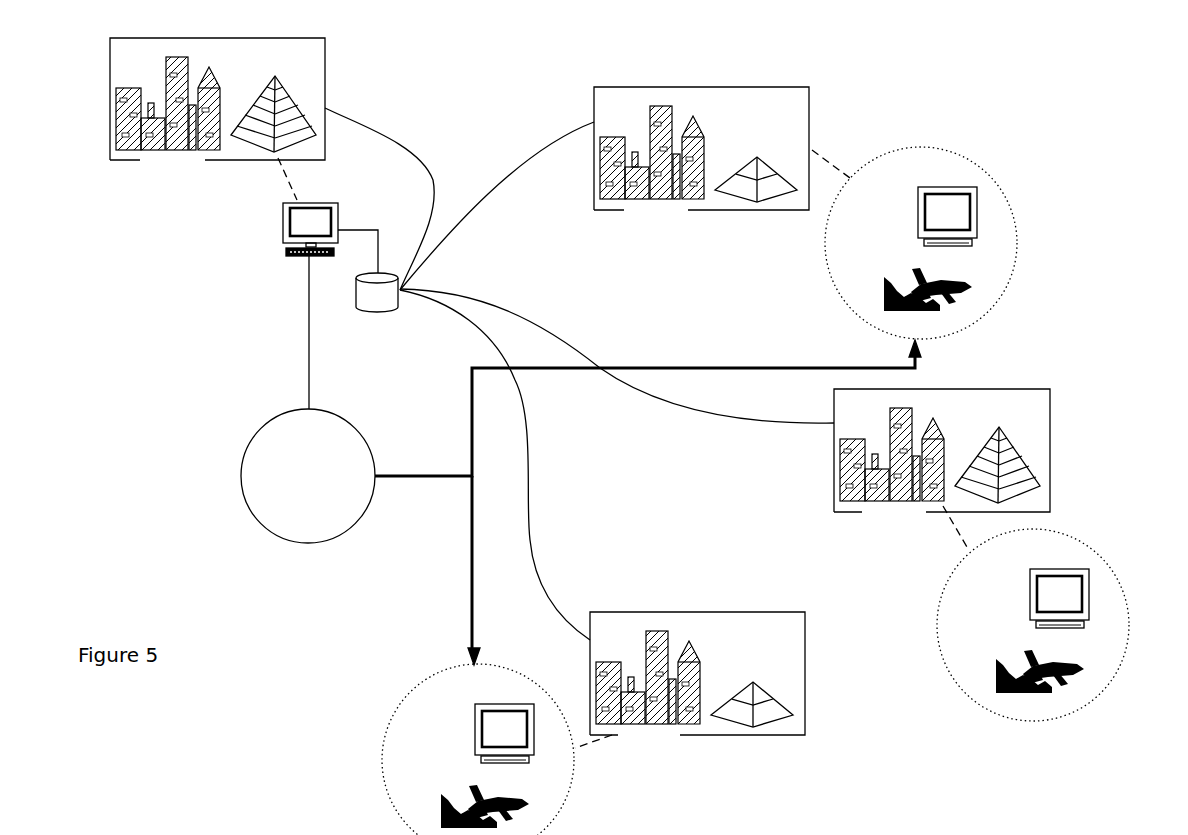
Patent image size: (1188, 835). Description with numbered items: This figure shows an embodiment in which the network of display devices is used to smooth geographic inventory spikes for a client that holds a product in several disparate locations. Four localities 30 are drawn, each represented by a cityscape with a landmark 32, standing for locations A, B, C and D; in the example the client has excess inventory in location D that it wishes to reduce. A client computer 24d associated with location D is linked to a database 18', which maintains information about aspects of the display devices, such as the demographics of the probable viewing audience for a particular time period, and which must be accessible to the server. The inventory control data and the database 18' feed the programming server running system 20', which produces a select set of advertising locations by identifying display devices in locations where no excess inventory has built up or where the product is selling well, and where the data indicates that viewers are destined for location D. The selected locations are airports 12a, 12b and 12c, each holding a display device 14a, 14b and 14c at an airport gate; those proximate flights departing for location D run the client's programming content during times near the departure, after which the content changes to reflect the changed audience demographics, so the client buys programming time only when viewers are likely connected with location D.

The locality 30 is at (110, 73).
The locality landmark / pyramid 32 is at (283, 100).
The client d computer 24d is at (283, 228).
The database 18' is at (373, 309).
The system 20' is at (266, 476).
The airport 12a is at (896, 225).
The airport 12b is at (1008, 607).
The airport 12c is at (453, 742).
The display device 14a is at (977, 207).
The display device 14b is at (1089, 589).
The display device 14c is at (534, 724).